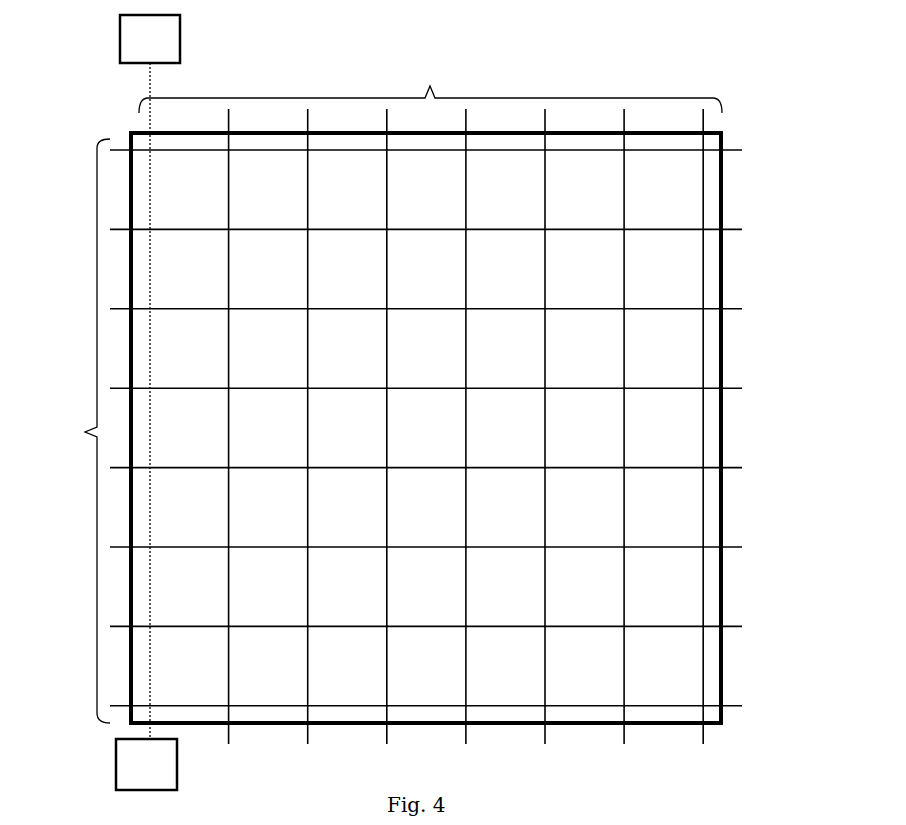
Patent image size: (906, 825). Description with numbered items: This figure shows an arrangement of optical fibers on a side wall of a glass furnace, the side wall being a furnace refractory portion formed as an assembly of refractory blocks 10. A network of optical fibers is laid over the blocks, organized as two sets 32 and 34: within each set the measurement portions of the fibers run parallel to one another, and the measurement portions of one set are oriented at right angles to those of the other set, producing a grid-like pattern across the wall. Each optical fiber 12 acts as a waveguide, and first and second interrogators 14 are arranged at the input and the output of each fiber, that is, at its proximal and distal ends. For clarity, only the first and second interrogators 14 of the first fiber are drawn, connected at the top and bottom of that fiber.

The assembly of refractory blocks 10 is at (671, 133).
The optical fiber 12 is at (149, 180).
The interrogator 14 is at (148, 402).
The set of fibers 32 is at (75, 431).
The set of fibers 34 is at (430, 75).